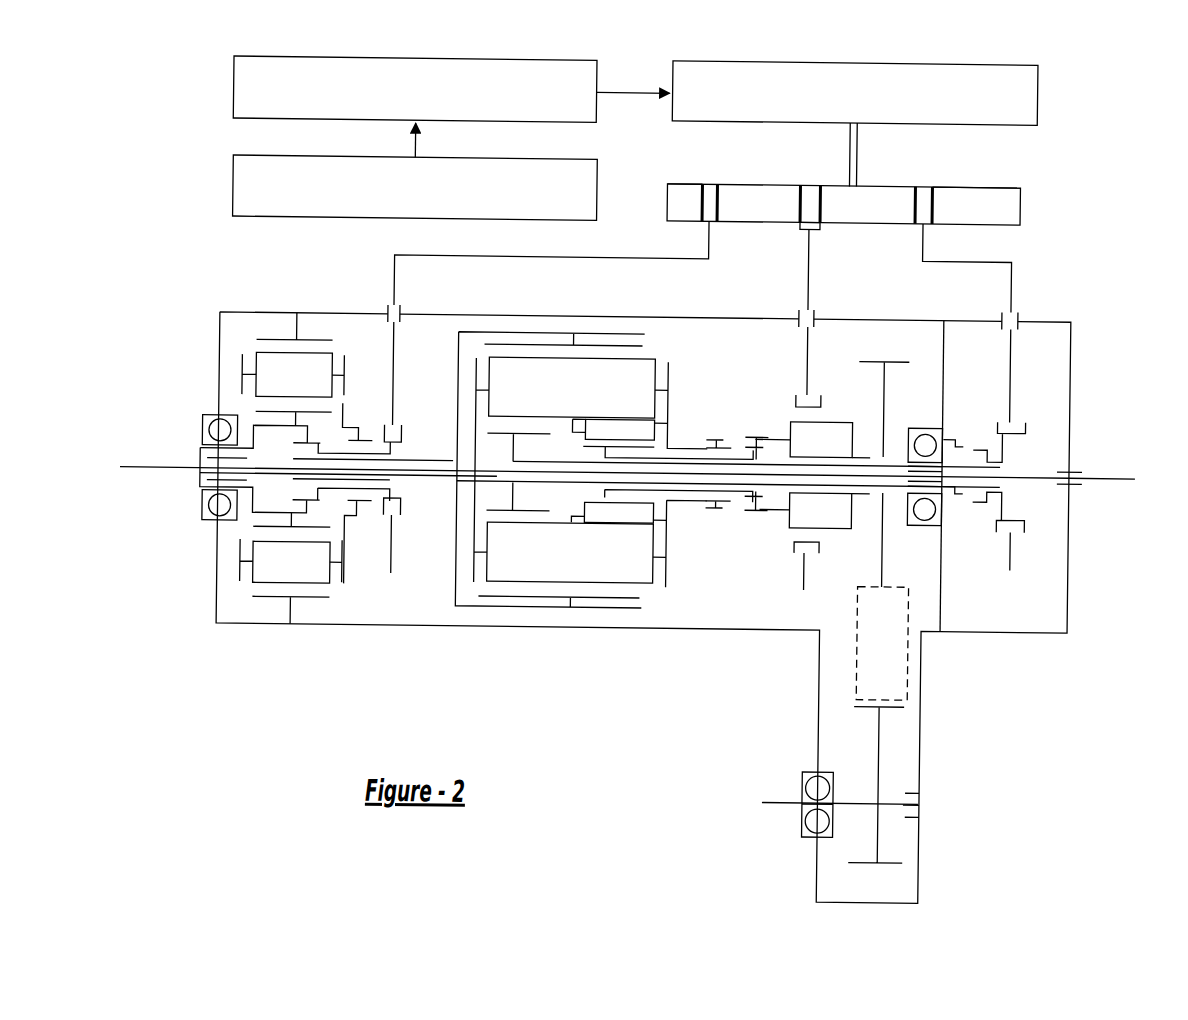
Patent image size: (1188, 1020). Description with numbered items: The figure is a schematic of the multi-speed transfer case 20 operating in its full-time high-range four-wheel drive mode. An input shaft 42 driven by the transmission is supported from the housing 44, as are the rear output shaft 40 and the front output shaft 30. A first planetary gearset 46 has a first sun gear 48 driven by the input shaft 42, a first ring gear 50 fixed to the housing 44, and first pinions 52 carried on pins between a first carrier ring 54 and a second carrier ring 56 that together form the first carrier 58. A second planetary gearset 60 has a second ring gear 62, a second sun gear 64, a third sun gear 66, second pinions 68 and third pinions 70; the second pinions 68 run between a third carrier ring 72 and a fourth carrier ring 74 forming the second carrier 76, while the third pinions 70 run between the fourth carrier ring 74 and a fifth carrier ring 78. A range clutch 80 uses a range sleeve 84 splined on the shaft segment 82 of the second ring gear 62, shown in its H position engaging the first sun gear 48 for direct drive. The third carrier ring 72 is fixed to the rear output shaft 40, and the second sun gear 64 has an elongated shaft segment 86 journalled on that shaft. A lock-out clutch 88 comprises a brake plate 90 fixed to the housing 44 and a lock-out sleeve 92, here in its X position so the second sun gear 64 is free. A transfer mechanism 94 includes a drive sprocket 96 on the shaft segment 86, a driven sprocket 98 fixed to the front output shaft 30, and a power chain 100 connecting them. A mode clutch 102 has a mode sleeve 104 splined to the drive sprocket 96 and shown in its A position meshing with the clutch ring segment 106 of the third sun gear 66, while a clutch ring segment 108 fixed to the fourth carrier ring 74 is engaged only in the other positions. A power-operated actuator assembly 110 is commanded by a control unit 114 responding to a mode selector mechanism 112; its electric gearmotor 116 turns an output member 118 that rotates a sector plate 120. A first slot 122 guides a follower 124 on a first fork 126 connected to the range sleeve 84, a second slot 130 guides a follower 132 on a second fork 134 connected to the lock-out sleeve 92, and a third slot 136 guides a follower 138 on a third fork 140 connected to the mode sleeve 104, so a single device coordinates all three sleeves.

The transfer case 20 is at (500, 641).
The front output shaft 30 is at (773, 794).
The rear output shaft 40 is at (1112, 466).
The input shaft 42 is at (150, 465).
The housing 44 is at (920, 742).
The first planetary gearset 46 is at (333, 610).
The first sun gear 48 is at (273, 529).
The first ring gear 50 is at (289, 608).
The first pinions 52 is at (300, 369).
The first carrier ring 54 is at (241, 366).
The second carrier ring 56 is at (343, 401).
The first carrier 58 is at (349, 555).
The second planetary gearset 60 is at (614, 498).
The second ring gear 62 is at (587, 602).
The second sun gear 64 is at (525, 509).
The third sun gear 66 is at (628, 495).
The second pinions 68 is at (636, 367).
The third pinions 70 is at (615, 425).
The third carrier ring 72 is at (476, 488).
The fourth carrier ring 74 is at (668, 390).
The second carrier 76 is at (678, 542).
The fifth carrier ring 78 is at (571, 508).
The range clutch 80 is at (420, 403).
The shaft segment 82 is at (433, 479).
The range sleeve 84 is at (393, 440).
The elongated shaft segment 86 is at (553, 457).
The lock-out clutch 88 is at (1036, 432).
The brake plate 90 is at (945, 356).
The lock-out sleeve 92 is at (1005, 498).
The transfer mechanism 94 is at (918, 656).
The drive sprocket 96 is at (868, 353).
The driven sprocket 98 is at (880, 831).
The power chain 100 is at (877, 673).
The mode clutch 102 is at (787, 530).
The mode sleeve 104 is at (828, 410).
The clutch ring segment 106 is at (738, 491).
The clutch ring segment 108 is at (688, 441).
The power-operated actuator assembly 110 is at (1014, 158).
The mode selector mechanism 112 is at (250, 178).
The control unit 114 is at (256, 88).
The electric gearmotor 116 is at (1014, 80).
The output member 118 is at (851, 146).
The sector plate 120 is at (1012, 197).
The first slot 122 is at (700, 206).
The follower 124 is at (707, 188).
The first fork 126 is at (509, 252).
The second slot 130 is at (929, 205).
The follower 132 is at (919, 186).
The second fork 134 is at (990, 250).
The third slot 136 is at (815, 204).
The follower 138 is at (800, 221).
The third fork 140 is at (807, 260).